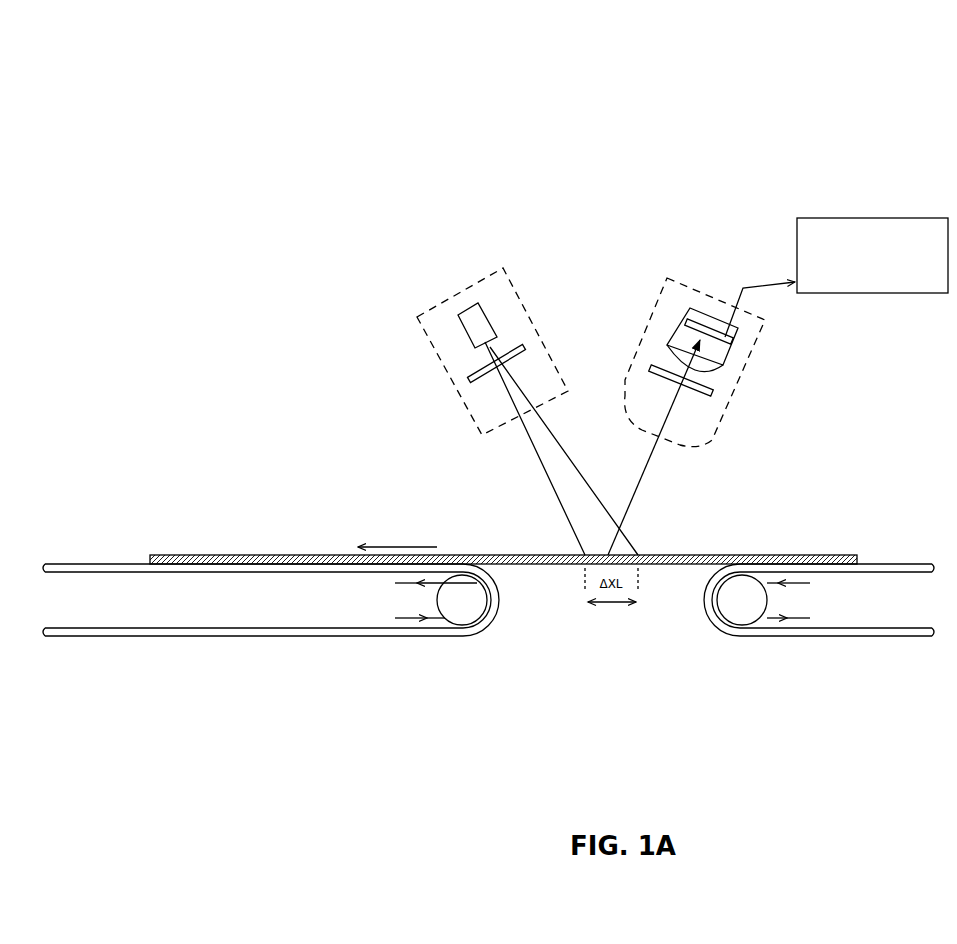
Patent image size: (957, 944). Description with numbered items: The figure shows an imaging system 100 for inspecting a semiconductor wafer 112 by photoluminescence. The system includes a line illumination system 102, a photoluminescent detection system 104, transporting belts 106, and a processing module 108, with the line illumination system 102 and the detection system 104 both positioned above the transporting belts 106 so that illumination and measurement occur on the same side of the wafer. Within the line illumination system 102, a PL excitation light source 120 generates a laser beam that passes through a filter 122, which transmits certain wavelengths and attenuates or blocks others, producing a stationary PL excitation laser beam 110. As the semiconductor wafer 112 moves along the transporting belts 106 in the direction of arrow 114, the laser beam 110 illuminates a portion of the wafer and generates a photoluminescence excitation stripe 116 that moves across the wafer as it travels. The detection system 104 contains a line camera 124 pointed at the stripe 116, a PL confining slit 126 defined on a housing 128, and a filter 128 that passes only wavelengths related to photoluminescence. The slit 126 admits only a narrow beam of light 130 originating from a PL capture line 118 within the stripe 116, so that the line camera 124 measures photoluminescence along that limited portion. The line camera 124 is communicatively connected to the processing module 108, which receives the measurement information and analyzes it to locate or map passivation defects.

The imaging system 100 is at (617, 91).
The line illumination system 102 is at (473, 254).
The photoluminescent (PL) detection system 104 is at (719, 259).
The transporting belts 106 is at (300, 672).
The processing module 108 is at (852, 268).
The PL excitation laser beam 110 is at (567, 480).
The semiconductor wafer 112 is at (189, 548).
The arrow 114 is at (397, 533).
The photoluminescence excitation stripe 116 is at (592, 554).
The PL capture line 118 is at (612, 554).
The PL excitation light source 120 is at (473, 322).
The filter 122 is at (468, 379).
The line camera 124 is at (738, 332).
The PL confining slit 126 is at (667, 440).
The housing / filter 128 is at (714, 393).
The narrow beam of light 130 is at (670, 413).